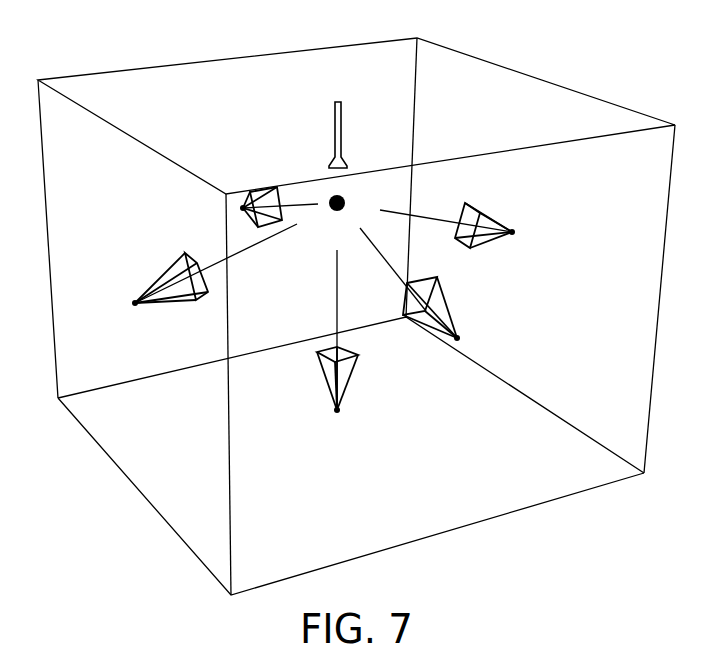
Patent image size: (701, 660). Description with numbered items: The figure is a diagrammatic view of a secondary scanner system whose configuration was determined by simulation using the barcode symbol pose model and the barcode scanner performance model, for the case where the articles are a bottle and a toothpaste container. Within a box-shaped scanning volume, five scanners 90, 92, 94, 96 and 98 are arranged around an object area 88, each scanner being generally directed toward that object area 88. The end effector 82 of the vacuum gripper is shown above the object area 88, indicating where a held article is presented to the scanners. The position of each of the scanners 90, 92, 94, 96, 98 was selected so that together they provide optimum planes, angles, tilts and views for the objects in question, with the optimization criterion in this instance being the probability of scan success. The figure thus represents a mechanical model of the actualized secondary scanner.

The end effector 82 is at (342, 113).
The object area 88 is at (453, 142).
The scanner 90 is at (264, 187).
The scanner 92 is at (496, 222).
The scanner 94 is at (447, 303).
The scanner 96 is at (168, 258).
The scanner 98 is at (353, 387).